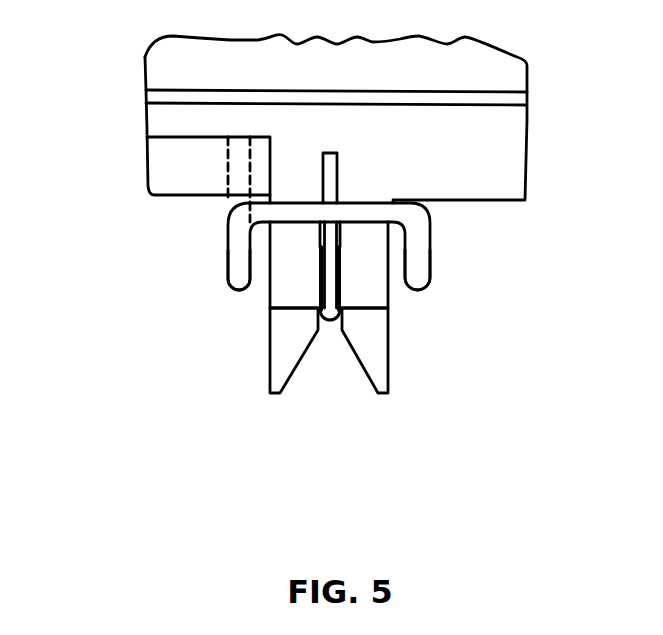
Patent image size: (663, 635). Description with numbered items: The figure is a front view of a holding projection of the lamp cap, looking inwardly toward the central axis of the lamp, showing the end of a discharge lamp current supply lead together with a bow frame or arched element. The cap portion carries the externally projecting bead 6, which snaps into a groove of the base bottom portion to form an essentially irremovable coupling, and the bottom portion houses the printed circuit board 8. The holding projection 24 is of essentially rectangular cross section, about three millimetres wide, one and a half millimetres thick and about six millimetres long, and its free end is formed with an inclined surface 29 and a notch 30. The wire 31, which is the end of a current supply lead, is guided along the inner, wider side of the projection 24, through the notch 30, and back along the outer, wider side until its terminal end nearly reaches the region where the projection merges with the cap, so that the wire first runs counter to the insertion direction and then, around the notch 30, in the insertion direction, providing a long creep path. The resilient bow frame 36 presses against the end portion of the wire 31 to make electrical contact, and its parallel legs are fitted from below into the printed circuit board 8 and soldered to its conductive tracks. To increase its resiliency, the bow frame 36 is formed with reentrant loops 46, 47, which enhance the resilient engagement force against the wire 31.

The externally projecting bead 6 is at (492, 72).
The printed circuit board 8 is at (180, 163).
The holding projection 24 is at (367, 298).
The inclined surface 29 is at (592, 373).
The notch 30 is at (331, 362).
The wire 31 is at (330, 290).
The bow frame 36 is at (425, 215).
The reentrant loop 46 is at (235, 275).
The reentrant loop 47 is at (418, 280).